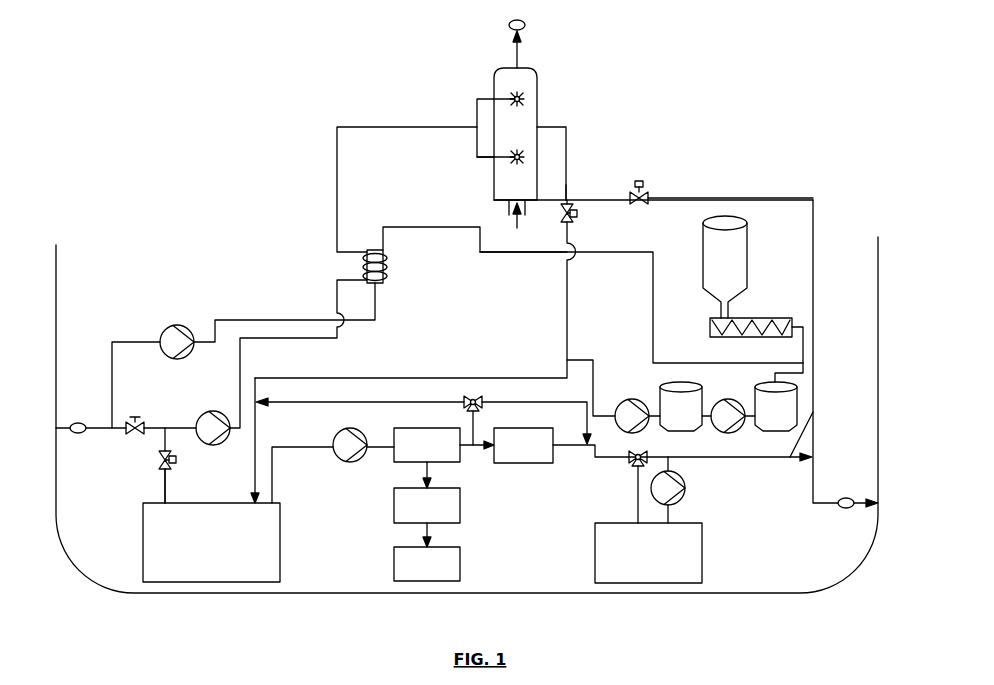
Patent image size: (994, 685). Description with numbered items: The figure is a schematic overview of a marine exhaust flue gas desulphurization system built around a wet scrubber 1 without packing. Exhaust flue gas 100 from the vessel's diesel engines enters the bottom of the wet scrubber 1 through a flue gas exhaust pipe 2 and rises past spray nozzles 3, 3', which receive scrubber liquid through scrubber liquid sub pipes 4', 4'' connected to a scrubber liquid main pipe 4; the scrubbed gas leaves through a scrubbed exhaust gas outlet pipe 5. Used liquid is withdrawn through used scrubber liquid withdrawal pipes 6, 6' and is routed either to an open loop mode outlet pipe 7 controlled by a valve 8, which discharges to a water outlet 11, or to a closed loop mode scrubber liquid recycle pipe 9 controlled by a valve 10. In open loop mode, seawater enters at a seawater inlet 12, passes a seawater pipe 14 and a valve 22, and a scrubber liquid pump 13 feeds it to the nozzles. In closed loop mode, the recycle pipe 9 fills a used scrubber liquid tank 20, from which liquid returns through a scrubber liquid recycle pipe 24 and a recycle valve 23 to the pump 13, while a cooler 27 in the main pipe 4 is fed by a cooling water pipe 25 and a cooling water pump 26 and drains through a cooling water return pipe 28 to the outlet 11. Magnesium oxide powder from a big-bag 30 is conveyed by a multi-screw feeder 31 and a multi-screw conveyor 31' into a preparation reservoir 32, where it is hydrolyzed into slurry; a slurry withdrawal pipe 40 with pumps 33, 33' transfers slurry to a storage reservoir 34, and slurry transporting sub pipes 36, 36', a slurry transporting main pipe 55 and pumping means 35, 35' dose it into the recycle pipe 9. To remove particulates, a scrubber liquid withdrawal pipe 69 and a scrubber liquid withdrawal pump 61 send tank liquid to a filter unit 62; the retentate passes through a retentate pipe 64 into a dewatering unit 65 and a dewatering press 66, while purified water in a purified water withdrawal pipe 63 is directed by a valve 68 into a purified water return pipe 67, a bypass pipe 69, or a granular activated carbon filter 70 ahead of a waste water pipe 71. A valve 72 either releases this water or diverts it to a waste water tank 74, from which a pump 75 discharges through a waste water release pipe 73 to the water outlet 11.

The wet scrubber 1 is at (515, 134).
The flue gas exhaust pipe 2 is at (505, 208).
The spray nozzle 3 is at (543, 97).
The spray nozzle 3' is at (535, 149).
The scrubber liquid main pipe 4 is at (353, 277).
The scrubber liquid sub pipe 4' is at (472, 122).
The scrubber liquid sub pipe 4'' is at (466, 163).
The scrubbed exhaust gas outlet pipe 5 is at (520, 57).
The used scrubber liquid withdrawal pipe 6 is at (569, 158).
The used scrubber liquid withdrawal pipe 6' is at (573, 184).
The open loop mode outlet pipe 7 is at (752, 198).
The valve 8 is at (636, 190).
The closed loop mode scrubber liquid recycle pipe 9 is at (567, 300).
The valve 10 is at (575, 215).
The water outlet 11 is at (879, 500).
The seawater inlet 12 is at (55, 424).
The scrubber liquid pump 13 is at (213, 412).
The seawater pipe 14 is at (100, 425).
The used scrubber liquid tank 20 is at (211, 542).
The valve 22 is at (140, 434).
The recycle valve 23 is at (172, 462).
The scrubber liquid recycle pipe 24 is at (165, 484).
The cooling water pipe 25 is at (112, 353).
The cooling water pump 26 is at (175, 325).
The cooler 27 is at (387, 277).
The cooling water return pipe 28 is at (495, 253).
The big-bag 30 is at (725, 267).
The multi-screw feeder 31 is at (756, 301).
The multi-screw conveyor 31' is at (751, 327).
The preparation reservoir 32 is at (771, 406).
The pump 33 is at (765, 410).
The pump 33' is at (789, 354).
The storage reservoir 34 is at (675, 406).
The pumping means 35 is at (624, 398).
The pumping means 35' is at (632, 416).
The slurry transporting sub pipe 36 is at (606, 364).
The slurry transporting sub pipe 36' is at (591, 388).
The slurry withdrawal pipe 40 is at (740, 430).
The slurry transporting main pipe 55 is at (578, 358).
The scrubber liquid withdrawal pump 61 is at (345, 455).
The filter unit 62 is at (444, 445).
The purified water withdrawal pipe 63 is at (471, 452).
The retentate pipe 64 is at (417, 478).
The dewatering unit 65 is at (427, 517).
The dewatering press 66 is at (427, 564).
The purified water return pipe 67 is at (280, 403).
The valve 68 is at (472, 397).
The scrubber liquid withdrawal pipe 69 is at (540, 402).
The granular activated carbon filter 70 is at (523, 445).
The waste water pipe 71 is at (592, 458).
The valve 72 is at (645, 452).
The waste water release pipe 73 is at (815, 415).
The waste water tank 74 is at (648, 553).
The pump 75 is at (680, 500).
The exhaust flue gas 100 is at (529, 222).